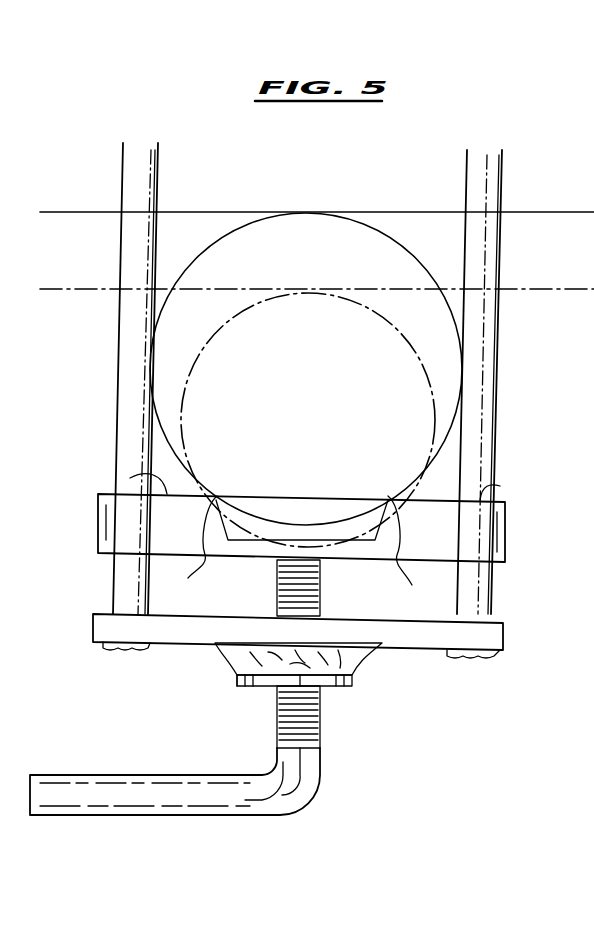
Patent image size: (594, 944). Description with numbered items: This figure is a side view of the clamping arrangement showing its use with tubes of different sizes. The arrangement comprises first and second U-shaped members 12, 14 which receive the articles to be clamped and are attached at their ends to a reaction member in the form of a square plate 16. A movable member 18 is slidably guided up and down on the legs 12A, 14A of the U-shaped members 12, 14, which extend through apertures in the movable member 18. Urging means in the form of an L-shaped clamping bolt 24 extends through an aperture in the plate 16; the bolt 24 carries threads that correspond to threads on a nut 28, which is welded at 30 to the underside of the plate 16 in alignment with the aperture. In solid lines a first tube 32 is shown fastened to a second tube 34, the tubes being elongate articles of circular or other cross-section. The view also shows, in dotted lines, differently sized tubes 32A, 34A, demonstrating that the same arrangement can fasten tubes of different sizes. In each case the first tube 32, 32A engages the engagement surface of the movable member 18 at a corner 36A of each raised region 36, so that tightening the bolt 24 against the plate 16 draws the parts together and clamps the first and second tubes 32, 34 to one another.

The first U-shaped member 12 is at (110, 432).
The leg 12A is at (130, 397).
The second U-shaped member 14 is at (500, 376).
The leg 14A is at (484, 456).
The square plate 16 is at (420, 641).
The movable member 18 is at (488, 540).
The L-shaped clamping bolt 24 is at (270, 795).
The nut 28 is at (341, 688).
The weld 30 is at (238, 660).
The first tube 32 is at (213, 248).
The first tube (alternative size) 32A is at (411, 358).
The second tube 34 is at (546, 212).
The second tube (alternative size) 34A is at (557, 289).
The raised region 36 is at (130, 478).
The corner 36A is at (298, 551).